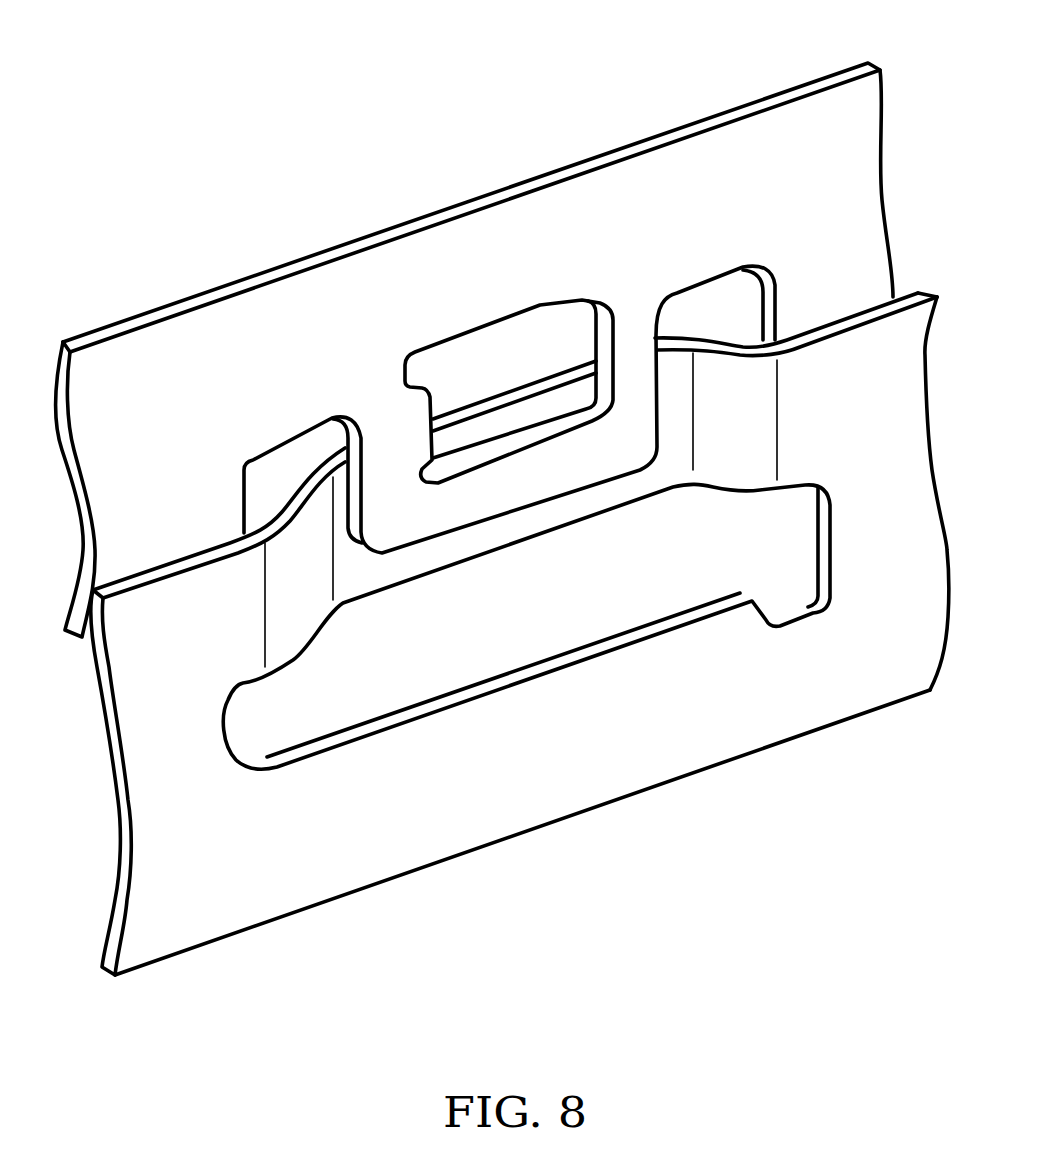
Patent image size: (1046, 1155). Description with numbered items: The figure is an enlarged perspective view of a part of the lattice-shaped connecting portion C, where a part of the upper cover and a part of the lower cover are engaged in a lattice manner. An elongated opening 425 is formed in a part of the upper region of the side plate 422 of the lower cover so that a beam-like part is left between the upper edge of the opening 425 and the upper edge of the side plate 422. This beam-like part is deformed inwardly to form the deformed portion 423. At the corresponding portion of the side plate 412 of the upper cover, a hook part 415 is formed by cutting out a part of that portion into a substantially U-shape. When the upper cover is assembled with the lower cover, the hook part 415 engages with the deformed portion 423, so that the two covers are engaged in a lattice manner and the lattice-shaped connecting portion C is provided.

The lattice-shaped connecting portion C is at (512, 160).
The side plate of the upper cover 412 is at (777, 133).
The hook part 415 is at (522, 482).
The side plate of the lower cover 422 is at (804, 713).
The deformed portion 423 is at (462, 548).
The elongated opening 425 is at (553, 592).